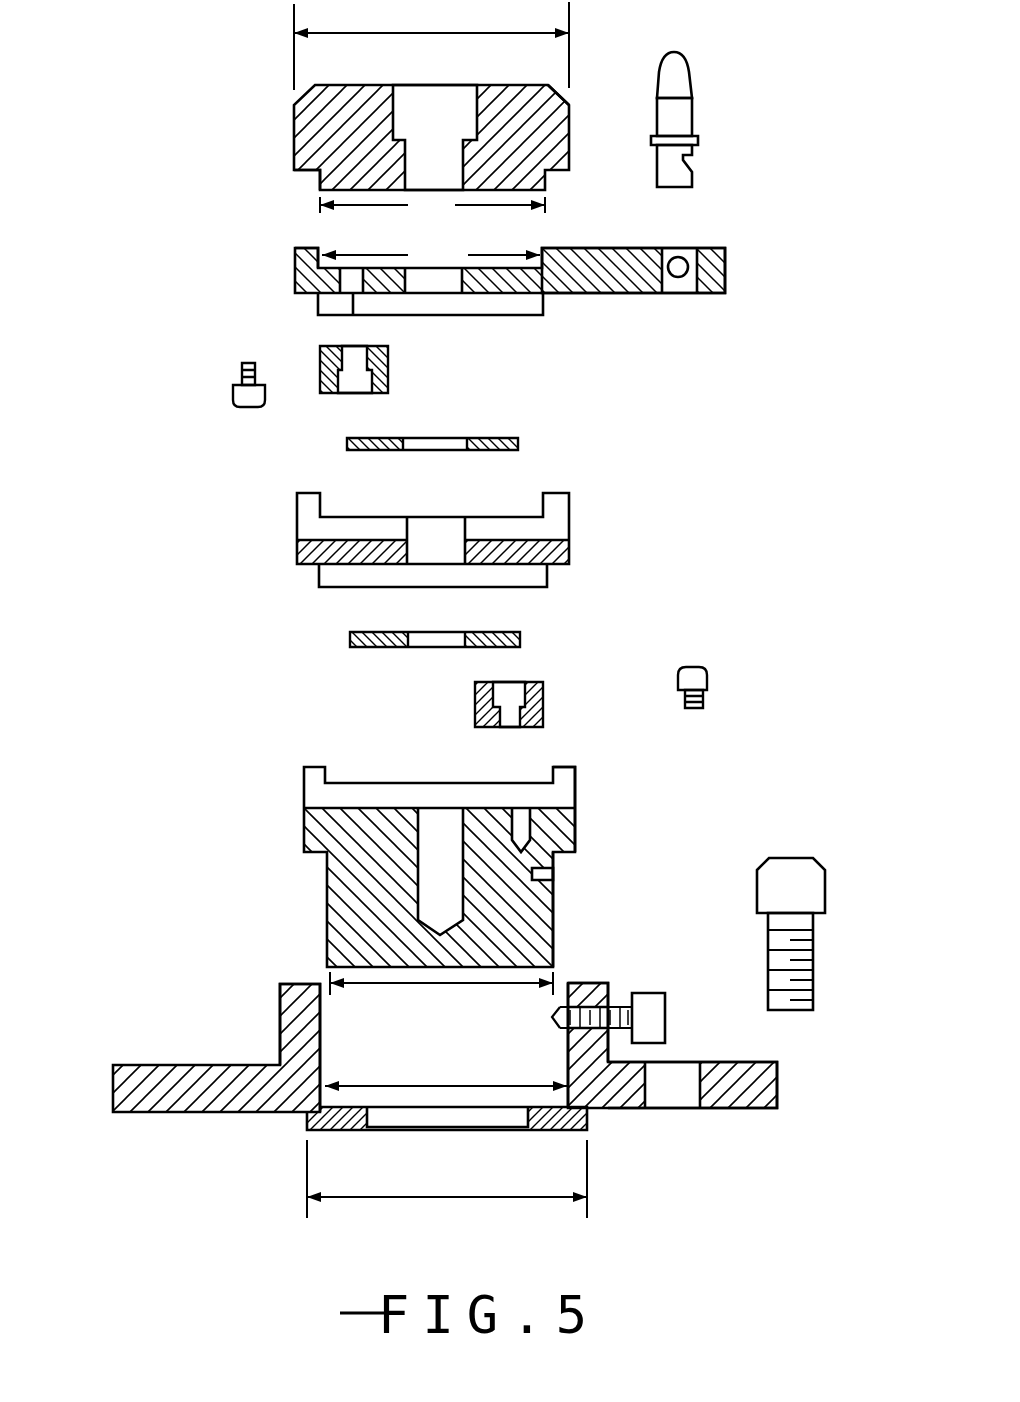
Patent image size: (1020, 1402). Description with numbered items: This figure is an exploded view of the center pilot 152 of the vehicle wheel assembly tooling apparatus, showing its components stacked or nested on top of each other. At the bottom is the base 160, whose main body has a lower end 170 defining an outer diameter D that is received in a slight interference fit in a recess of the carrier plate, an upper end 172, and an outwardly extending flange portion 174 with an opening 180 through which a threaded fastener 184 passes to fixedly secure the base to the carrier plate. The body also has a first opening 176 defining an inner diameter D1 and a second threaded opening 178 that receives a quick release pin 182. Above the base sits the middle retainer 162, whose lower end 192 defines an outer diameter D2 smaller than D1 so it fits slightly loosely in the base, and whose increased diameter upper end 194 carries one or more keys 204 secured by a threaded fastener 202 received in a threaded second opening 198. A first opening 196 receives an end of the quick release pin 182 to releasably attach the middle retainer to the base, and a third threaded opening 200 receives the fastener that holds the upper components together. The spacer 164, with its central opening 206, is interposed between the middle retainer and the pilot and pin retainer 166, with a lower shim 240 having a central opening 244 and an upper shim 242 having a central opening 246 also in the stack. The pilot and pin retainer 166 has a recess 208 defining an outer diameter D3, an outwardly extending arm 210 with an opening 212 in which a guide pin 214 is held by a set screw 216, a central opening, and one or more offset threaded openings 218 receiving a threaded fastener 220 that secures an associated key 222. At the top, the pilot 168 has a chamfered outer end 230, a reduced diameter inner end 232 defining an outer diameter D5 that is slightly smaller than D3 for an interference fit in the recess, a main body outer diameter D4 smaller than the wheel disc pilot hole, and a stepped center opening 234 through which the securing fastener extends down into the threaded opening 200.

The center pilot 152 is at (236, 712).
The base 160 is at (457, 1082).
The middle retainer 162 is at (417, 880).
The spacer 164 is at (370, 530).
The pilot and pin retainer 166 is at (486, 275).
The pilot 168 is at (408, 122).
The lower end 170 is at (560, 1135).
The upper end 172 is at (637, 985).
The flange portion 174 is at (777, 1073).
The first opening 176 is at (320, 1033).
The second threaded opening 178 is at (568, 1032).
The opening 180 is at (688, 1110).
The quick release pin 182 is at (650, 993).
The threaded fastener 184 is at (798, 858).
The lower end 192 is at (556, 940).
The increased diameter upper end 194 is at (576, 770).
The first opening 196 is at (556, 873).
The second opening 198 is at (517, 812).
The third threaded opening 200 is at (433, 830).
The threaded fastener 202 is at (705, 698).
The key 204 is at (548, 700).
The central opening 206 is at (455, 532).
The recess 208 is at (323, 248).
The outwardly extending arm 210 is at (606, 292).
The opening 212 is at (690, 287).
The guide pin 214 is at (693, 115).
The set screw 216 is at (680, 257).
The offset threaded opening 218 is at (351, 300).
The threaded fastener 220 is at (240, 382).
The key 222 is at (392, 375).
The chamfered outer end 230 is at (536, 84).
The reduced diameter inner end 232 is at (349, 205).
The stepped center opening 234 is at (427, 84).
The lower shim 240 is at (453, 648).
The upper shim 242 is at (478, 424).
The central opening 244 is at (423, 648).
The central opening 246 is at (452, 437).
The outer diameter D is at (470, 1200).
The inner diameter D1 is at (455, 1085).
The outer diameter D2 is at (483, 990).
The outer diameter D3 is at (431, 255).
The outer diameter D4 is at (431, 45).
The outer diameter D5 is at (432, 206).